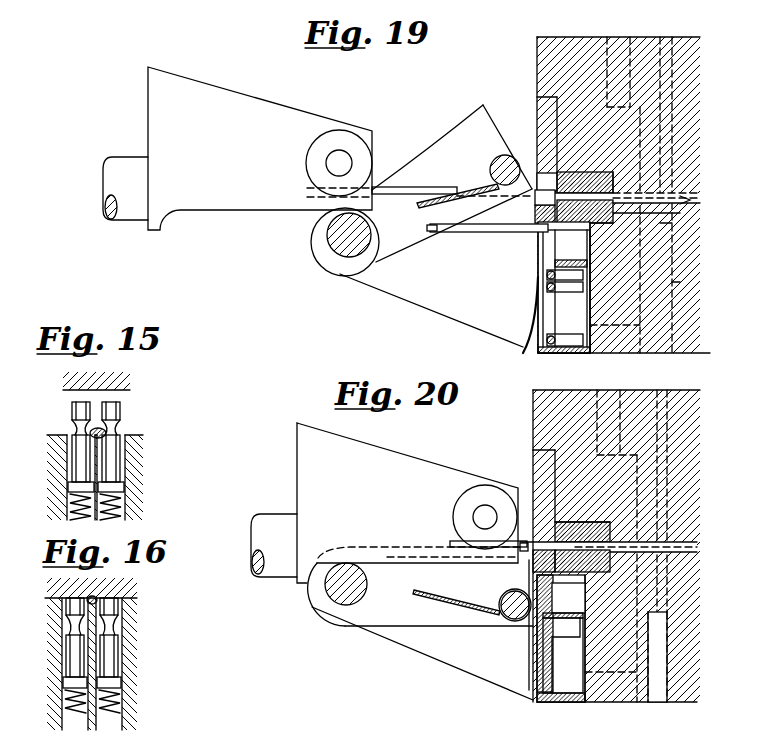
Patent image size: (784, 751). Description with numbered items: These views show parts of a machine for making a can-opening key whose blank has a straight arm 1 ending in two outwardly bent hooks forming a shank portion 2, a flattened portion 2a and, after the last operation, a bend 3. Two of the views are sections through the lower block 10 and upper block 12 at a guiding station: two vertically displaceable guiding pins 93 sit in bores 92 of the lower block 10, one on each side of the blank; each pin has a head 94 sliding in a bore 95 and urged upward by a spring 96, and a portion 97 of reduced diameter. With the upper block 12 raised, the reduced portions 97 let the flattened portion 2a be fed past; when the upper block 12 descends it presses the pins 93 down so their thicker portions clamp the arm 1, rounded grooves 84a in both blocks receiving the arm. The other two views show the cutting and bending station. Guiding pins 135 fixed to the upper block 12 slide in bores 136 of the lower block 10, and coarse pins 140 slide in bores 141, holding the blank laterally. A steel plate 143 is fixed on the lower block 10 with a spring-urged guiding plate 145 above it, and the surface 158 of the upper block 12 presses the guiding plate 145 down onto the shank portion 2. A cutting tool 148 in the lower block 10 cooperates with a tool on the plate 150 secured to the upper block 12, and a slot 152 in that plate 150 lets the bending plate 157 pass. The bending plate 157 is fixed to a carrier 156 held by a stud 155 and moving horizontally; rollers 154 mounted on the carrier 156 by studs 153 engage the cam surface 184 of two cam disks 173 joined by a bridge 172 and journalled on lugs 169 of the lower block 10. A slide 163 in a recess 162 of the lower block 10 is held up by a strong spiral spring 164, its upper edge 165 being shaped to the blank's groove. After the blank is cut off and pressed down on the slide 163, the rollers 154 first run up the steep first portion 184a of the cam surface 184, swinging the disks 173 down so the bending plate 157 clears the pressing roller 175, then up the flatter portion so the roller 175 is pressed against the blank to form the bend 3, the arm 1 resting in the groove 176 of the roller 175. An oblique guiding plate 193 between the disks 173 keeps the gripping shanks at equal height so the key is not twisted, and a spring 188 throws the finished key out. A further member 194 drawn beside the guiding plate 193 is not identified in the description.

In FIG. 19, the straight arm 1 is at (681, 168).
In FIG. 20, the straight arm 1 is at (528, 638).
In FIG. 19, the hooks (shank portion) 2 is at (613, 173).
In FIG. 15, the flattened portion 2a is at (107, 434).
In FIG. 16, the flattened portion 2a is at (92, 600).
In FIG. 20, the bend 3 is at (530, 576).
In FIG. 19, the lower block 10 is at (658, 308).
In FIG. 20, the lower block 10 is at (625, 702).
In FIG. 15, the lower block 10 is at (140, 477).
In FIG. 16, the lower block 10 is at (92, 664).
In FIG. 19, the upper block 12 is at (562, 37).
In FIG. 20, the upper block 12 is at (543, 390).
In FIG. 15, the upper block 12 is at (128, 388).
In FIG. 16, the upper block 12 is at (120, 592).
In FIG. 15, the rounded grooves 84a is at (112, 383).
In FIG. 15, the bores 92 is at (72, 455).
In FIG. 16, the bores 92 is at (122, 645).
In FIG. 15, the guiding pins 93 is at (72, 405).
In FIG. 16, the guiding pins 93 is at (66, 610).
In FIG. 15, the head 94 is at (128, 487).
In FIG. 16, the head 94 is at (122, 680).
In FIG. 15, the bore 95 is at (68, 490).
In FIG. 16, the bore 95 is at (118, 718).
In FIG. 15, the spring 96 is at (70, 510).
In FIG. 16, the spring 96 is at (118, 702).
In FIG. 15, the portion of reduced diameter 97 is at (73, 428).
In FIG. 19, the guiding pins 135 is at (670, 238).
In FIG. 20, the guiding pins 135 is at (667, 577).
In FIG. 19, the bores 136 is at (672, 282).
In FIG. 20, the bores 136 is at (668, 630).
In FIG. 19, the coarse pins 140 is at (588, 118).
In FIG. 20, the coarse pins 140 is at (588, 468).
In FIG. 19, the bores 141 is at (642, 343).
In FIG. 20, the bores 141 is at (642, 702).
In FIG. 19, the steel plate 143 is at (690, 204).
In FIG. 20, the steel plate 143 is at (608, 547).
In FIG. 19, the guiding plate 145 is at (540, 112).
In FIG. 20, the guiding plate 145 is at (612, 527).
In FIG. 19, the cutting tool 148 is at (537, 213).
In FIG. 20, the cutting tool 148 is at (587, 573).
In FIG. 19, the plate 150 is at (540, 98).
In FIG. 20, the plate 150 is at (538, 463).
In FIG. 19, the slot 152 is at (533, 165).
In FIG. 19, the studs 153 is at (333, 160).
In FIG. 20, the studs 153 is at (478, 513).
In FIG. 19, the rollers 154 is at (325, 132).
In FIG. 20, the rollers 154 is at (488, 485).
In FIG. 19, the stud 155 is at (118, 157).
In FIG. 20, the stud 155 is at (263, 514).
In FIG. 19, the carrier 156 is at (207, 90).
In FIG. 20, the carrier 156 is at (372, 453).
In FIG. 19, the bending plate 157 is at (420, 193).
In FIG. 20, the bending plate 157 is at (530, 545).
In FIG. 19, the surface of the upper block 158 is at (587, 167).
In FIG. 20, the surface of the upper block 158 is at (597, 522).
In FIG. 19, the recess 162 is at (601, 347).
In FIG. 20, the recess 162 is at (570, 680).
In FIG. 19, the slide 163 is at (543, 257).
In FIG. 20, the slide 163 is at (530, 627).
In FIG. 19, the spiral spring 164 is at (547, 287).
In FIG. 19, the upper edge of the slide 165 is at (500, 233).
In FIG. 20, the upper edge of the slide 165 is at (568, 598).
In FIG. 19, the lugs 169 is at (462, 310).
In FIG. 20, the lugs 169 is at (463, 658).
In FIG. 19, the bridge 172 is at (352, 247).
In FIG. 20, the bridge 172 is at (346, 584).
In FIG. 19, the cam disks 173 is at (390, 250).
In FIG. 19, the pressing roller 175 is at (498, 160).
In FIG. 20, the pressing roller 175 is at (499, 612).
In FIG. 20, the groove 176 is at (503, 600).
In FIG. 19, the cam surface 184 is at (440, 143).
In FIG. 20, the cam surface 184 is at (420, 557).
In FIG. 20, the first portion of cam surface 184a is at (375, 557).
In FIG. 19, the spring 188 is at (537, 330).
In FIG. 19, the guiding plate 193 is at (477, 197).
In FIG. 20, the guiding plate 193 is at (433, 600).
In FIG. 19, the slide 194 is at (490, 186).